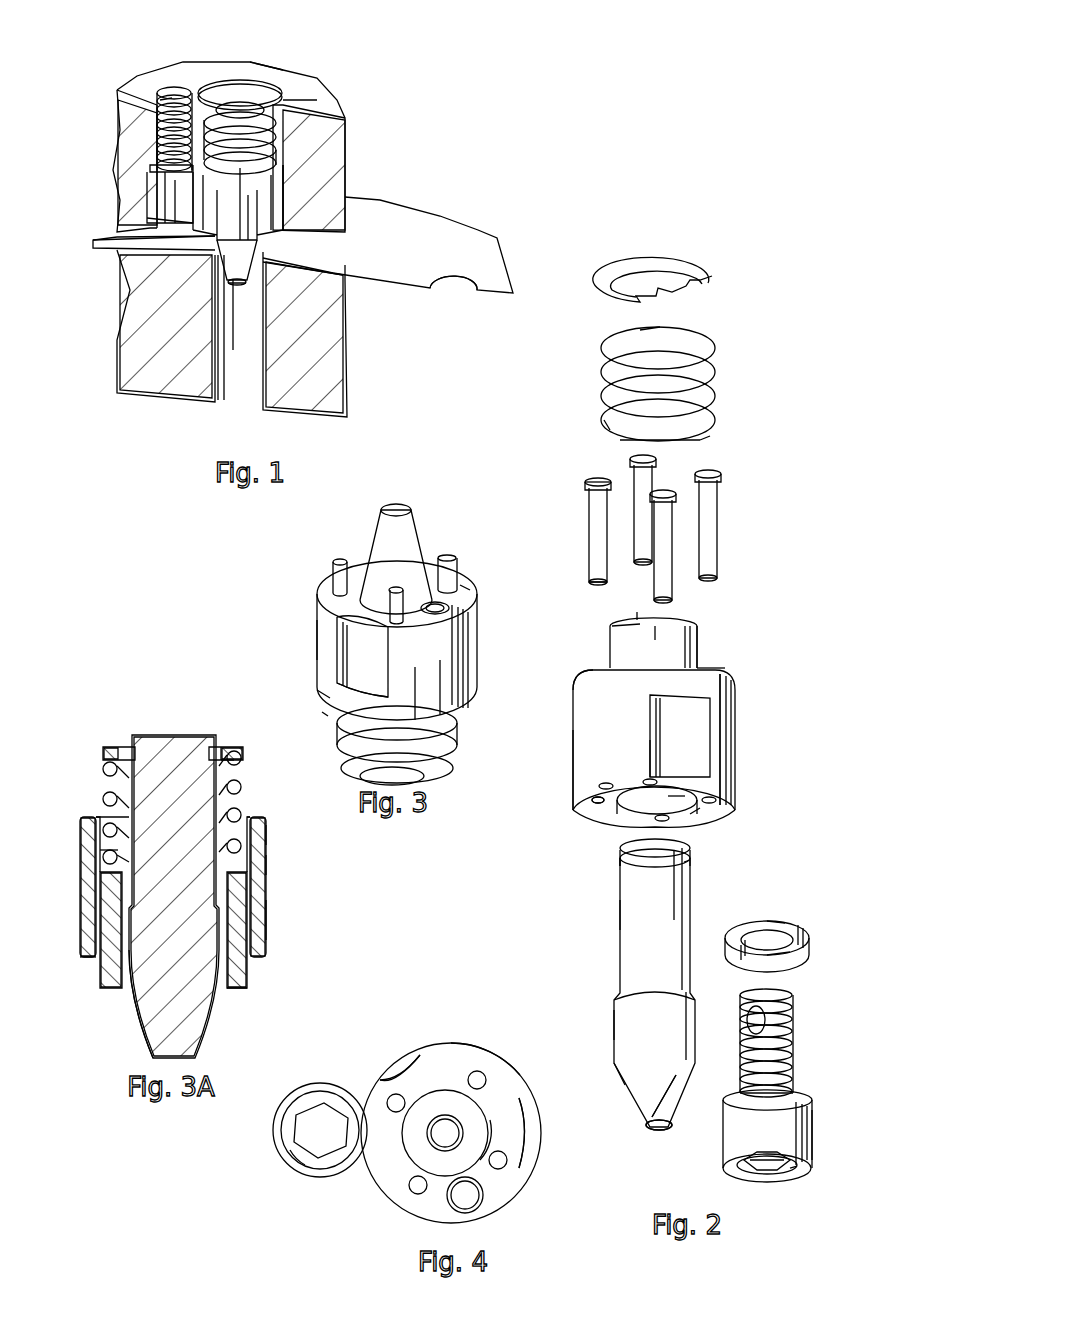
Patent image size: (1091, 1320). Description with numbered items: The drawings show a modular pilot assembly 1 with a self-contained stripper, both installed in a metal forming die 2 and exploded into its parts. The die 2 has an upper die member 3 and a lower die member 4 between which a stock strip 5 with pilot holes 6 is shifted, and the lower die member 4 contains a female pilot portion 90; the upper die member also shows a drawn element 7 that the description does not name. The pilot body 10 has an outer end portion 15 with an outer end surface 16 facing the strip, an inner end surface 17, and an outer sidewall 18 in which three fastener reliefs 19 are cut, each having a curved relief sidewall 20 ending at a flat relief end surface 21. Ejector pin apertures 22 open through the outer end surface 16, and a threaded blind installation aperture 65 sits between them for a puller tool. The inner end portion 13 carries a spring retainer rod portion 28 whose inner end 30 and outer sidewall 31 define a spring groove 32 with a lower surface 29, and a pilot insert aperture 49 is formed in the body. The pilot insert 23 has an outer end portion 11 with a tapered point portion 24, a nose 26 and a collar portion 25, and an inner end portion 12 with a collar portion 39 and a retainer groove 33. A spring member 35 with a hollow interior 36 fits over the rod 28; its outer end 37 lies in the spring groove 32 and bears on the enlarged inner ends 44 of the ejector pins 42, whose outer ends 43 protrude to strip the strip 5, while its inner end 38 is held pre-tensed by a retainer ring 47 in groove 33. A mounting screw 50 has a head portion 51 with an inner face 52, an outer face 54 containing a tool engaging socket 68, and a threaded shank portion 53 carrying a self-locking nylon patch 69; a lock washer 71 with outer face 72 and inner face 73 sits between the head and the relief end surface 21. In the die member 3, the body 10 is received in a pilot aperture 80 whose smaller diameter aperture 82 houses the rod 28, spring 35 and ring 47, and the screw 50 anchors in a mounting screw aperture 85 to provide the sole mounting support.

In FIG. 1, the pilot assembly 1 is at (280, 48).
In FIG. 2, the pilot assembly 1 is at (729, 232).
In FIG. 3, the pilot assembly 1 is at (439, 472).
In FIG. 3A, the pilot assembly 1 is at (135, 704).
In FIG. 4, the pilot assembly 1 is at (464, 1001).
In FIG. 1, the metal forming die 2 is at (139, 51).
In FIG. 1, the die member 3 is at (107, 100).
In FIG. 1, the die member 4 is at (109, 374).
In FIG. 1, the stock strip 5 is at (484, 228).
In FIG. 1, the pilot hole 6 is at (452, 288).
In FIG. 1, the housing bore 7 is at (318, 100).
In FIG. 2, the pilot body 10 is at (770, 670).
In FIG. 3, the pilot body 10 is at (313, 567).
In FIG. 3A, the pilot body 10 is at (78, 897).
In FIG. 4, the pilot body 10 is at (511, 1049).
In FIG. 2, the outer end portion 11 is at (685, 1102).
In FIG. 2, the inner end portion 12 is at (697, 872).
In FIG. 3, the inner end portion 12 is at (396, 559).
In FIG. 3A, the inner end portion 12 is at (185, 732).
In FIG. 2, the inner end portion 13 is at (702, 644).
In FIG. 3A, the inner end portion 13 is at (267, 925).
In FIG. 1, the outer end portion 15 is at (335, 280).
In FIG. 2, the outer end portion 15 is at (573, 775).
In FIG. 3, the outer end portion 15 is at (317, 622).
In FIG. 3A, the outer end portion 15 is at (267, 820).
In FIG. 2, the outer end surface 16 is at (694, 817).
In FIG. 3, the outer end surface 16 is at (466, 584).
In FIG. 3A, the outer end surface 16 is at (88, 958).
In FIG. 2, the inner end surface 17 is at (577, 680).
In FIG. 3, the inner end surface 17 is at (328, 712).
In FIG. 3A, the inner end surface 17 is at (252, 815).
In FIG. 4, the inner end surface 17 is at (460, 1050).
In FIG. 2, the outer sidewall 18 is at (726, 744).
In FIG. 3, the outer sidewall 18 is at (331, 697).
In FIG. 3A, the outer sidewall 18 is at (267, 860).
In FIG. 1, the fastener relief 19 is at (150, 250).
In FIG. 2, the fastener relief 19 is at (676, 762).
In FIG. 3, the fastener relief 19 is at (353, 648).
In FIG. 4, the fastener relief 19 is at (405, 1052).
In FIG. 2, the relief sidewall 20 is at (706, 737).
In FIG. 4, the relief sidewall 20 is at (400, 1068).
In FIG. 1, the relief end surface 21 is at (283, 185).
In FIG. 3, the relief end surface 21 is at (340, 680).
In FIG. 4, the relief end surface 21 is at (528, 1108).
In FIG. 2, the ejector pin aperture 22 is at (596, 803).
In FIG. 4, the ejector pin aperture 22 is at (508, 1162).
In FIG. 1, the pilot insert 23 is at (238, 225).
In FIG. 2, the pilot insert 23 is at (608, 950).
In FIG. 3A, the pilot insert 23 is at (131, 1020).
In FIG. 2, the point portion 24 is at (650, 1125).
In FIG. 4, the point portion 24 is at (430, 1145).
In FIG. 2, the collar portion 25 is at (614, 1027).
In FIG. 2, the nose 26 is at (620, 1083).
In FIG. 2, the spring retainer rod portion 28 is at (610, 632).
In FIG. 2, the lower surface 29 is at (698, 666).
In FIG. 2, the inner end 30 is at (637, 612).
In FIG. 2, the outer sidewall 31 is at (622, 657).
In FIG. 1, the spring groove 32 is at (276, 130).
In FIG. 3A, the spring groove 32 is at (96, 815).
In FIG. 2, the retainer groove 33 is at (622, 868).
In FIG. 1, the spring member 35 is at (278, 115).
In FIG. 2, the spring member 35 is at (715, 340).
In FIG. 3, the spring member 35 is at (358, 732).
In FIG. 3A, the spring member 35 is at (103, 771).
In FIG. 2, the hollow interior 36 is at (606, 428).
In FIG. 2, the outer end 37 is at (708, 440).
In FIG. 3A, the outer end 37 is at (100, 850).
In FIG. 2, the inner end 38 is at (628, 336).
In FIG. 3A, the inner end 38 is at (240, 762).
In FIG. 2, the collar portion 39 is at (618, 915).
In FIG. 2, the ejector pin 42 is at (645, 478).
In FIG. 3A, the ejector pin 42 is at (237, 882).
In FIG. 2, the outer end 43 is at (588, 582).
In FIG. 3, the outer end 43 is at (452, 556).
In FIG. 3A, the outer end 43 is at (240, 990).
In FIG. 2, the inner end 44 is at (585, 480).
In FIG. 1, the retainer ring 47 is at (205, 100).
In FIG. 2, the retainer ring 47 is at (712, 278).
In FIG. 3, the retainer ring 47 is at (410, 772).
In FIG. 3A, the retainer ring 47 is at (106, 746).
In FIG. 2, the pilot insert aperture 49 is at (694, 796).
In FIG. 1, the mounting screw 50 is at (150, 200).
In FIG. 2, the mounting screw 50 is at (735, 1160).
In FIG. 4, the mounting screw 50 is at (280, 1105).
In FIG. 1, the head portion 51 is at (155, 212).
In FIG. 2, the head portion 51 is at (812, 1130).
In FIG. 2, the inner face 52 is at (796, 1100).
In FIG. 1, the threaded shank portion 53 is at (157, 140).
In FIG. 2, the threaded shank portion 53 is at (796, 1047).
In FIG. 2, the outer face 54 is at (800, 1168).
In FIG. 4, the outer face 54 is at (295, 1160).
In FIG. 3, the installation aperture 65 is at (451, 607).
In FIG. 4, the installation aperture 65 is at (472, 1204).
In FIG. 2, the tool engaging socket 68 is at (765, 1163).
In FIG. 4, the tool engaging socket 68 is at (318, 1110).
In FIG. 2, the self-locking nylon patch 69 is at (762, 1018).
In FIG. 1, the lock washer 71 is at (155, 178).
In FIG. 2, the lock washer 71 is at (809, 945).
In FIG. 2, the outer face 72 is at (790, 962).
In FIG. 2, the inner face 73 is at (795, 926).
In FIG. 1, the pilot aperture 80 is at (276, 155).
In FIG. 1, the smaller diameter aperture 82 is at (268, 88).
In FIG. 1, the mounting screw aperture 85 is at (165, 100).
In FIG. 1, the female pilot portion 90 is at (233, 392).